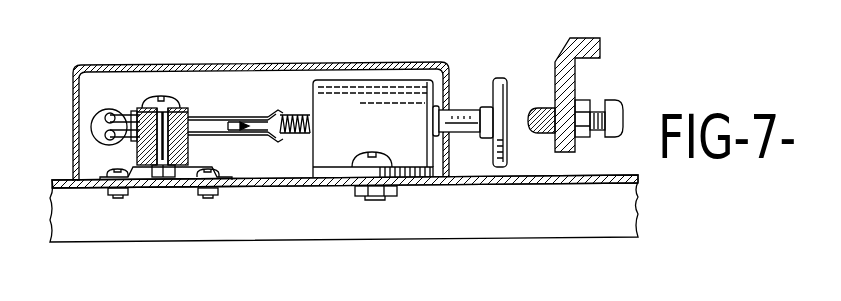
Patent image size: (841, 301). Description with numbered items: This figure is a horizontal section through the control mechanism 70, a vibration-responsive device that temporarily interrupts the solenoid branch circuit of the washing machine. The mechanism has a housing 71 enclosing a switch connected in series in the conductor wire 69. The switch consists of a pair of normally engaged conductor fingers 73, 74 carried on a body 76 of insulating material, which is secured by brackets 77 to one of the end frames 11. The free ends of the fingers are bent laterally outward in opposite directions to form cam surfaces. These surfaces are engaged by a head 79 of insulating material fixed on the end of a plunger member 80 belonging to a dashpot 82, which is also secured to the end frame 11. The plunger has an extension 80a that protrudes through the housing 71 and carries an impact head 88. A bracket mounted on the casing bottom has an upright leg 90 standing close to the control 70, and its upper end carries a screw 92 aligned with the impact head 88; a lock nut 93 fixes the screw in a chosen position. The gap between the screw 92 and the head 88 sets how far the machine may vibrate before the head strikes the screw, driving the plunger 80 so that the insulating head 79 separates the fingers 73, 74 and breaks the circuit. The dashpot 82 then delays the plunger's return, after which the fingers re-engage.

The end frame 11 is at (490, 234).
The conductor wire 69 is at (105, 117).
The control mechanism 70 is at (250, 58).
The housing 71 is at (320, 64).
The conductor finger 73 is at (200, 117).
The conductor finger 74 is at (210, 133).
The body of insulating material 76 is at (188, 148).
The brackets 77 is at (226, 169).
The head of insulating material 79 is at (294, 113).
The plunger member 80 is at (315, 122).
The plunger extension 80a is at (458, 113).
The dashpot 82 is at (340, 158).
The impact head 88 is at (498, 78).
The upright leg 90 is at (558, 58).
The screw 92 is at (538, 108).
The lock nut 93 is at (580, 104).